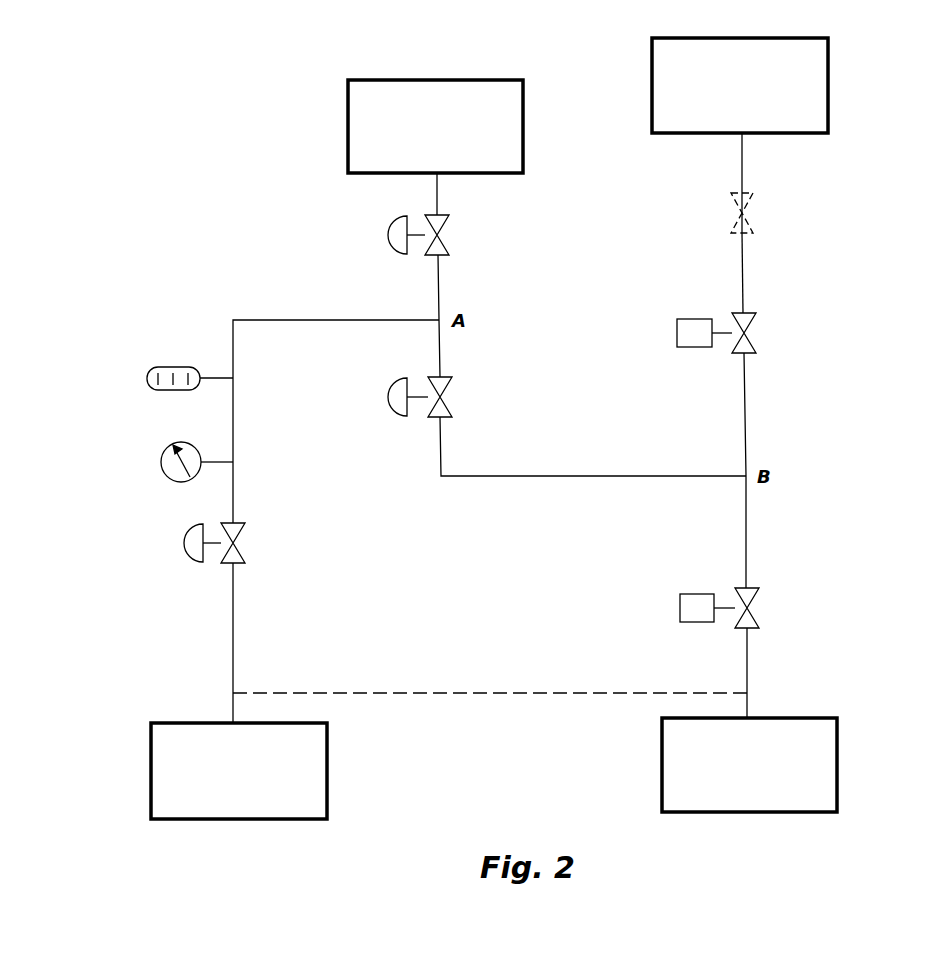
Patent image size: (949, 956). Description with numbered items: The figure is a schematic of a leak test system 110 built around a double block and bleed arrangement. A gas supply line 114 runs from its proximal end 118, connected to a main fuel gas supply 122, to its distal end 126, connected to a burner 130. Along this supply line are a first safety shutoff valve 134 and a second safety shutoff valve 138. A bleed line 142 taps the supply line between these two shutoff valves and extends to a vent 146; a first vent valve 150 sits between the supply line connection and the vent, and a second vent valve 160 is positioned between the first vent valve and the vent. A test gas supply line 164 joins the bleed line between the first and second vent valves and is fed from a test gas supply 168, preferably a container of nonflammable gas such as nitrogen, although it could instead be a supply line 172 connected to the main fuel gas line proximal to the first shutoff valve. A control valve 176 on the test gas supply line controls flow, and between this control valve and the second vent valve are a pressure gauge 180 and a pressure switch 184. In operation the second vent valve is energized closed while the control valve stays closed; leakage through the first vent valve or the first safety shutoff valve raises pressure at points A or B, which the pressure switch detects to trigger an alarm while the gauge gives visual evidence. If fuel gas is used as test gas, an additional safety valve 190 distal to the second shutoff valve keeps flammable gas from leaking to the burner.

The leak test system 110 is at (872, 373).
The gas supply line 114 is at (742, 250).
The proximal end 118 is at (747, 710).
The main fuel gas supply 122 is at (837, 740).
The distal end 126 is at (742, 143).
The burner 130 is at (828, 57).
The first safety shutoff valve 134 is at (757, 587).
The second safety shutoff valve 138 is at (752, 313).
The bleed line 142 is at (572, 478).
The vent 146 is at (523, 125).
The first vent valve 150 is at (447, 373).
The second vent valve 160 is at (450, 215).
The test gas supply line 164 is at (328, 320).
The test gas supply 168 is at (327, 742).
The supply line 172 is at (437, 693).
The control valve 176 is at (183, 538).
The pressure gauge 180 is at (162, 455).
The pressure switch 184 is at (146, 373).
The additional safety valve 190 is at (750, 190).